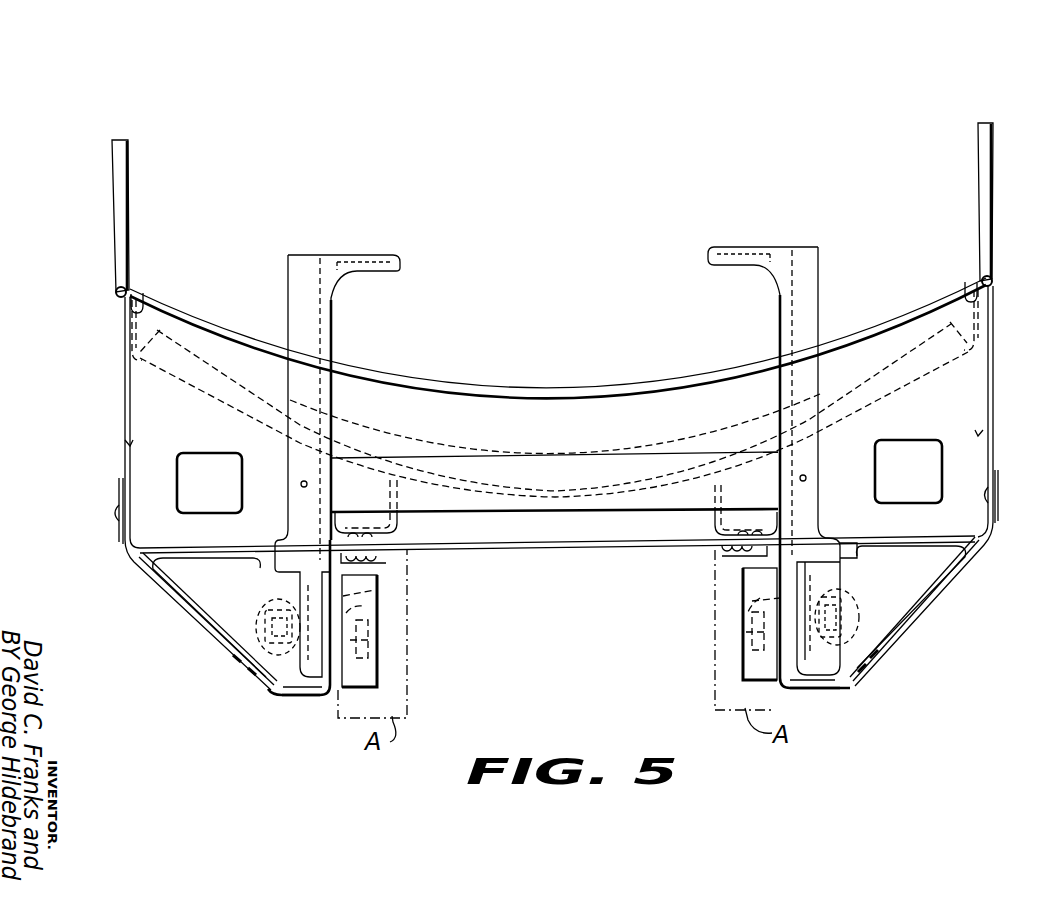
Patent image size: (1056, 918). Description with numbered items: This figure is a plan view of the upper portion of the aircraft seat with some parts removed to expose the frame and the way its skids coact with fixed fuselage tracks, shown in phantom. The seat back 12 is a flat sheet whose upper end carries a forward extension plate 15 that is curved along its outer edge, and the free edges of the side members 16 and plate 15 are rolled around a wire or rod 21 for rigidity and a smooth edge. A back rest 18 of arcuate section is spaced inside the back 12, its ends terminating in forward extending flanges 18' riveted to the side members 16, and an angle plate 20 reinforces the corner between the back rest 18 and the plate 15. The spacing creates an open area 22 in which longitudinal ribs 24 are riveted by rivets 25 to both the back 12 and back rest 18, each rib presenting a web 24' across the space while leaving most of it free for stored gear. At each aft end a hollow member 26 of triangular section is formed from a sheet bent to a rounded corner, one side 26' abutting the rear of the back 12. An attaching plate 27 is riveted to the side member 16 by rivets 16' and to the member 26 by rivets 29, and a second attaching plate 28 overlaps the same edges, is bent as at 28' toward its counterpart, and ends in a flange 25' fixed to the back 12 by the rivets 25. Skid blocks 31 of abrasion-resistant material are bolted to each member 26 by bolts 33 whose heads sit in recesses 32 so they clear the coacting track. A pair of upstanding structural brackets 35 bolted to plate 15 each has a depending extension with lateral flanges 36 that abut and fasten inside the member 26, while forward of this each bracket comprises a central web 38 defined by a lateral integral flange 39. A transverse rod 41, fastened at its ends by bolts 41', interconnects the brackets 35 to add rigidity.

The back 12 is at (642, 545).
The forward extension plate 15 is at (425, 405).
The side member 16 is at (556, 406).
The rivets 16' is at (556, 507).
The back rest 18 is at (554, 410).
The forward extending flange 18' is at (551, 325).
The angle plate 20 is at (358, 440).
The wire or rod 21 is at (130, 288).
The open area 22 is at (127, 440).
The longitudinal rib 24 is at (556, 507).
The web 24' is at (555, 510).
The rivets 25 is at (551, 549).
The flange 25' is at (554, 559).
The hollow member 26 is at (559, 612).
The side of hollow member 26' is at (559, 607).
The attaching plate 27 is at (121, 494).
The second attaching plate 28 is at (570, 711).
The bend 28' is at (556, 699).
The rivets 29 is at (245, 673).
The skid block 31 is at (365, 670).
The recess or well 32 is at (362, 607).
The bolt 33 is at (368, 640).
The structural bracket 35 is at (330, 325).
The lateral flange 36 is at (265, 562).
The central web 38 is at (322, 352).
The lateral integral flange 39 is at (290, 318).
The transverse bar or rod 41 is at (554, 494).
The bolts or attaching means 41' is at (553, 475).